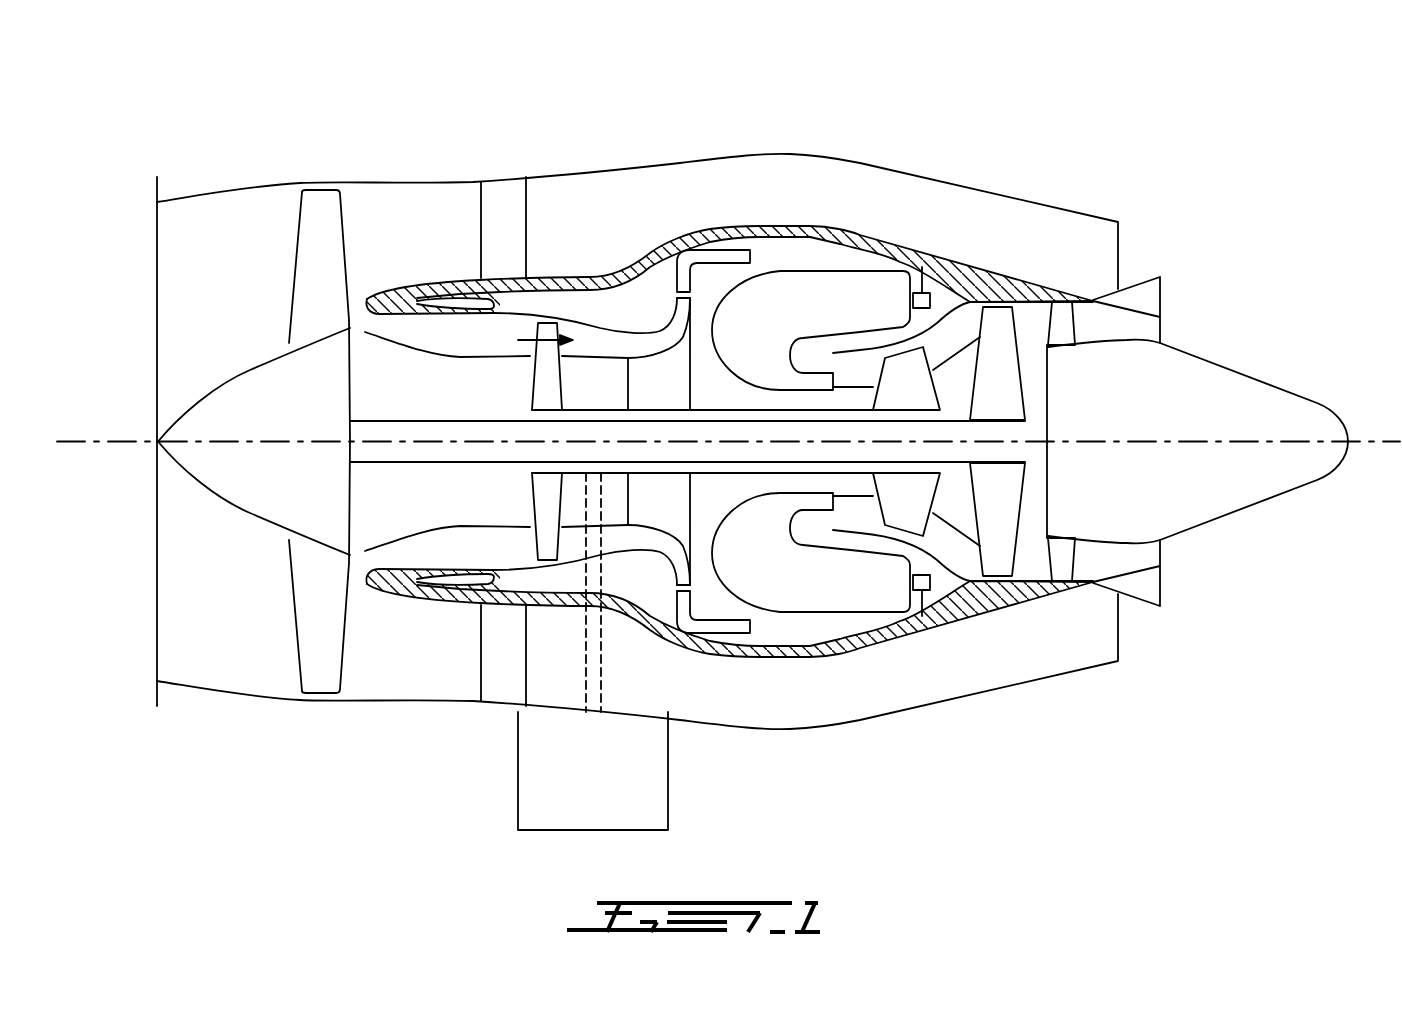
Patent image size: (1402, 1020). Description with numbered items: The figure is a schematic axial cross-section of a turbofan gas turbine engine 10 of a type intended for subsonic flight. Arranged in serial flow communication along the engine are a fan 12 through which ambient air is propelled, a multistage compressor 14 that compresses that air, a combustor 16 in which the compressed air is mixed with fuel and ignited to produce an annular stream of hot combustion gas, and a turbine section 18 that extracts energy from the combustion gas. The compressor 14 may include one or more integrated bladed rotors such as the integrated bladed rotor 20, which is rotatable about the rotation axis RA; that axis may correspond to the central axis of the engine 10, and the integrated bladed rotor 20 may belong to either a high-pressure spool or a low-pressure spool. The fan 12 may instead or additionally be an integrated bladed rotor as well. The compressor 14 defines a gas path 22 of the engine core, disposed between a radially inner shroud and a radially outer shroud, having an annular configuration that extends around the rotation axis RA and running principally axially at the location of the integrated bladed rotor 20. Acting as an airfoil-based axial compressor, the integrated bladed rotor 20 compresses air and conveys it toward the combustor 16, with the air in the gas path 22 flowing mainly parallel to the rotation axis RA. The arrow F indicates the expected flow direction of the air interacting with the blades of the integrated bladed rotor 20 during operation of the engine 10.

The gas turbine engine 10 is at (929, 149).
The fan 12 is at (313, 604).
The compressor 14 is at (597, 377).
The combustor 16 is at (813, 293).
The turbine section 18 is at (953, 512).
The integrated bladed rotor 20 is at (547, 377).
The gas path 22 is at (520, 327).
The flow direction F is at (556, 323).
The rotation axis RA is at (1387, 441).